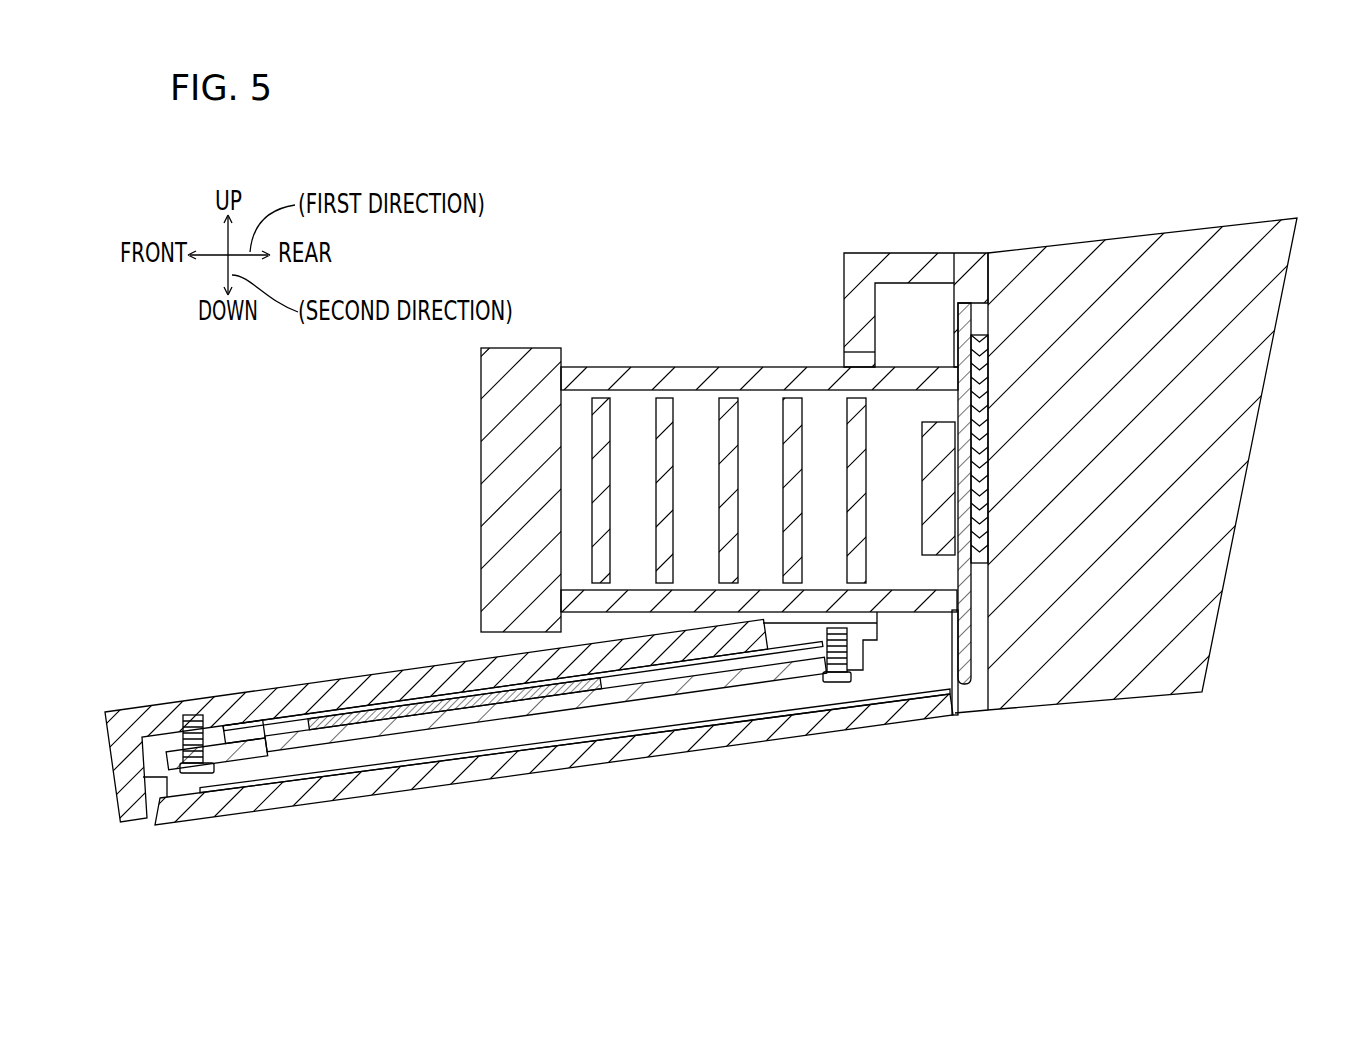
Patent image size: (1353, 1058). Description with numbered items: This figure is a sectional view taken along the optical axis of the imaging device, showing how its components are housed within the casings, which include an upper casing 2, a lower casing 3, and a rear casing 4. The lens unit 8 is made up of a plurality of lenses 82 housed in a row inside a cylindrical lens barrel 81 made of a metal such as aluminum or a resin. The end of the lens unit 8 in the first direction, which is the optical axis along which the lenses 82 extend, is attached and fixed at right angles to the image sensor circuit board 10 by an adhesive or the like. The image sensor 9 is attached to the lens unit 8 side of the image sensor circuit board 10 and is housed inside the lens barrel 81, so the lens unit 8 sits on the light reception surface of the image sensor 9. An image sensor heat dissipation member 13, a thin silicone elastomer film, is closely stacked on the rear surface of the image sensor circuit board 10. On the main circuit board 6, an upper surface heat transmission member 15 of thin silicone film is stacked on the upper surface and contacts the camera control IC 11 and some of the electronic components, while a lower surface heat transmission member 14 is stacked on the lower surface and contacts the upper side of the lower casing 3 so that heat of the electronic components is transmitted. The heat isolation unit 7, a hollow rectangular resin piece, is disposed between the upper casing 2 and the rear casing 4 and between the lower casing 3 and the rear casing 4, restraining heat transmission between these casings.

The upper casing 2 is at (140, 722).
The lower casing 3 is at (768, 740).
The rear casing 4 is at (1227, 263).
The main circuit board 6 is at (290, 748).
The heat isolation unit 7 is at (967, 262).
The lens unit 8 is at (628, 430).
The image sensor 9 is at (942, 548).
The image sensor circuit board 10 is at (967, 667).
The camera control IC 11 is at (375, 728).
The image sensor heat dissipation member 13 is at (978, 332).
The lower surface heat transmission member 14 is at (550, 745).
The upper surface heat transmission member 15 is at (290, 722).
The lens barrel 81 is at (717, 378).
The lenses 82 is at (745, 272).